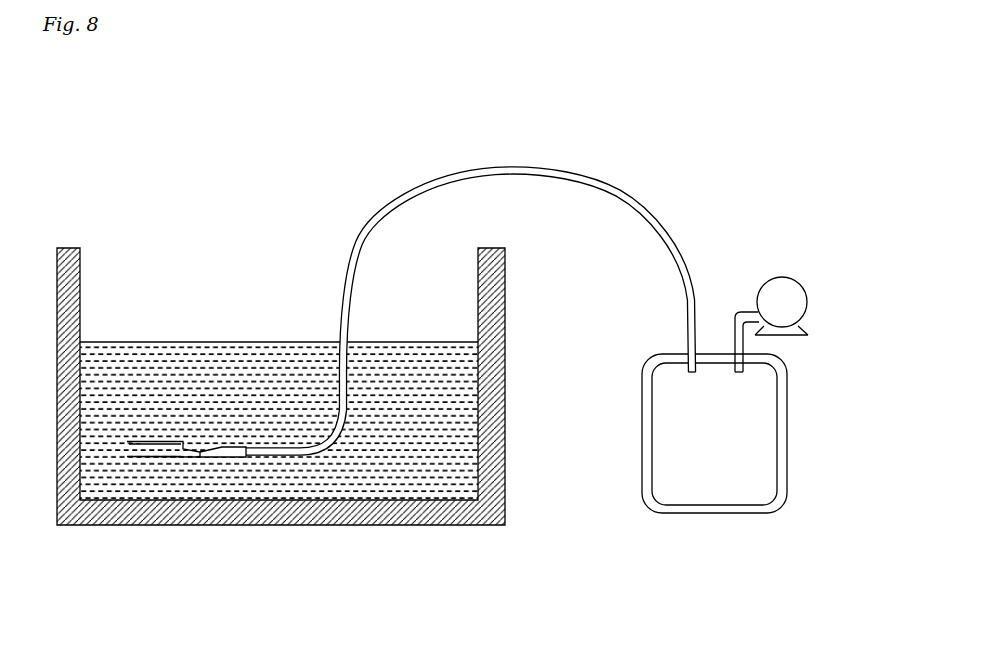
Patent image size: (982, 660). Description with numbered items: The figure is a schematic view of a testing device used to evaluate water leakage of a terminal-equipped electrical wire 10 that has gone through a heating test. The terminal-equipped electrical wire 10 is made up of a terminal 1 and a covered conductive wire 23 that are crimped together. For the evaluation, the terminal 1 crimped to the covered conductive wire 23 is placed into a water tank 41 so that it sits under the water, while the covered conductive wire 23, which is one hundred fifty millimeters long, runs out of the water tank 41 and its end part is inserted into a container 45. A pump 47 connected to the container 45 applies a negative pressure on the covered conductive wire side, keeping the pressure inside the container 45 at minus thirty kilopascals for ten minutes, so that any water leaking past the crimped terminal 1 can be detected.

The terminal-equipped electrical wire 10 is at (518, 153).
The terminal 1 is at (212, 457).
The covered conductive wire 23 is at (615, 193).
The water tank 41 is at (360, 520).
The container 45 is at (690, 492).
The pump 47 is at (783, 288).